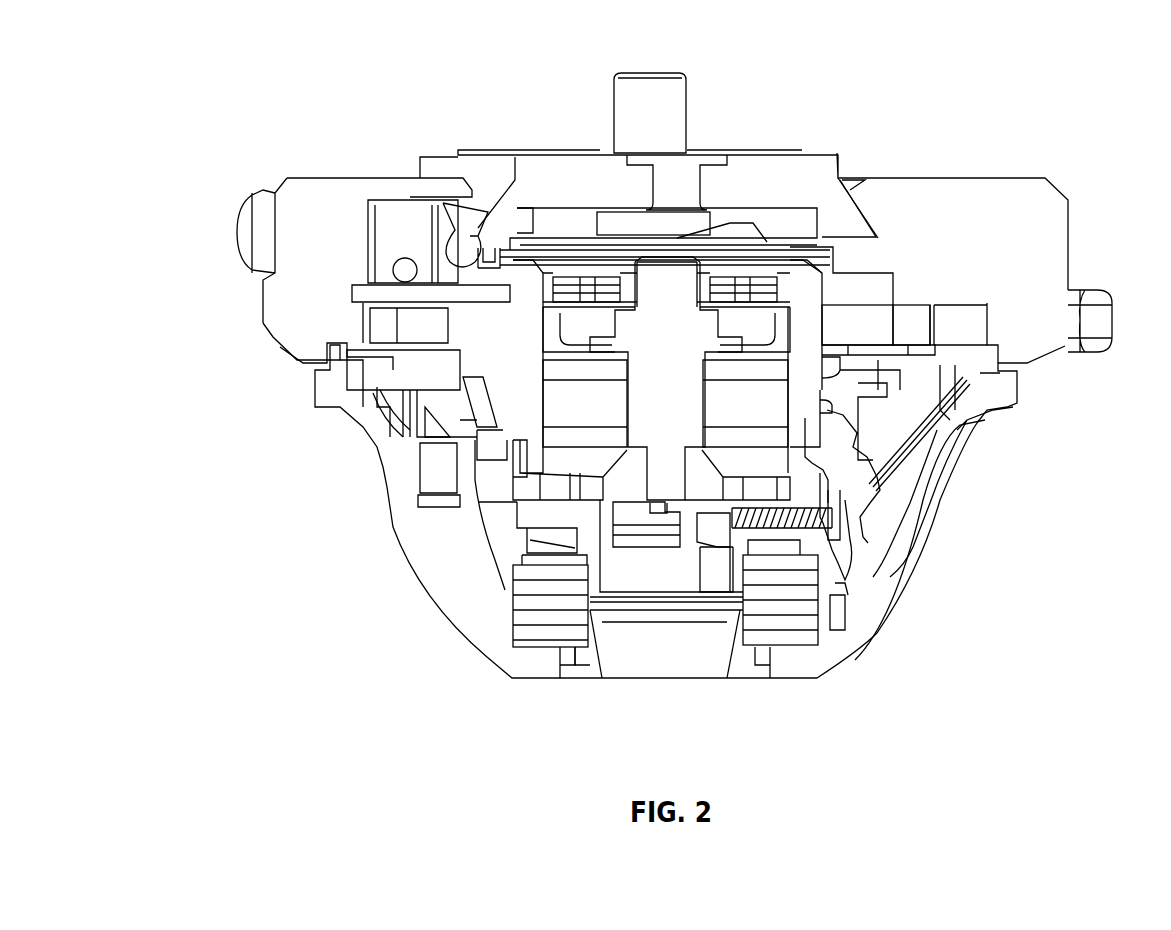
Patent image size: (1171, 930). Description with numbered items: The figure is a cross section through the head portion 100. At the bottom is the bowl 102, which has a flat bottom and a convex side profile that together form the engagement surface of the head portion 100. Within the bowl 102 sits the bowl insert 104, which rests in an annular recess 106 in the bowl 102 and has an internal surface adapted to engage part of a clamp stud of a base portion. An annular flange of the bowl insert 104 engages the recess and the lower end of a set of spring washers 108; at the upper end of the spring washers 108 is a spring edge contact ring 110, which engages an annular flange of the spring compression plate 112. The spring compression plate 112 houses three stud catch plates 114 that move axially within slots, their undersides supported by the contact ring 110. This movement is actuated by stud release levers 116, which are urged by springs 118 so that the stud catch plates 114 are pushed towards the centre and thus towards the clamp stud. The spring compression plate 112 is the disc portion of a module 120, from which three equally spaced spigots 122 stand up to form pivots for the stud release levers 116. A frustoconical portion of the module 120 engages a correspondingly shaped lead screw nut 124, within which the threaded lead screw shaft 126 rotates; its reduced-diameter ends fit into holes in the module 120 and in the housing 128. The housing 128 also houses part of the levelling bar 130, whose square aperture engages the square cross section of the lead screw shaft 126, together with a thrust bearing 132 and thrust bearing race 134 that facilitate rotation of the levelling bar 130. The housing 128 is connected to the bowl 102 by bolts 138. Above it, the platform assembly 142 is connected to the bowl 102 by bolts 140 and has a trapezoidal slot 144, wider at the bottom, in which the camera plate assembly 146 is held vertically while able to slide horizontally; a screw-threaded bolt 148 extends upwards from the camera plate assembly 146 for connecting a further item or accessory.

The head portion 100 is at (868, 102).
The bowl 102 is at (466, 592).
The bowl insert 104 is at (673, 656).
The annular recess 106 is at (577, 656).
The set of spring washers 108 is at (540, 634).
The spring edge contact ring 110 is at (792, 566).
The spring compression plate 112 is at (678, 573).
The stud catch plates 114 is at (810, 546).
The stud release levers 116 is at (880, 483).
The springs 118 is at (834, 521).
The module 120 is at (835, 494).
The spigots 122 is at (830, 407).
The lead screw nut 124 is at (579, 450).
The lead screw shaft 126 is at (682, 384).
The housing 128 is at (594, 269).
The levelling bar 130 is at (578, 323).
The thrust bearing 132 is at (578, 291).
The thrust bearing race 134 is at (556, 305).
The bolts 138 is at (492, 455).
The bolts 140 is at (932, 348).
The platform assembly 142 is at (1013, 234).
The slot 144 is at (868, 220).
The camera plate assembly 146 is at (436, 151).
The screw-threaded bolt 148 is at (608, 104).